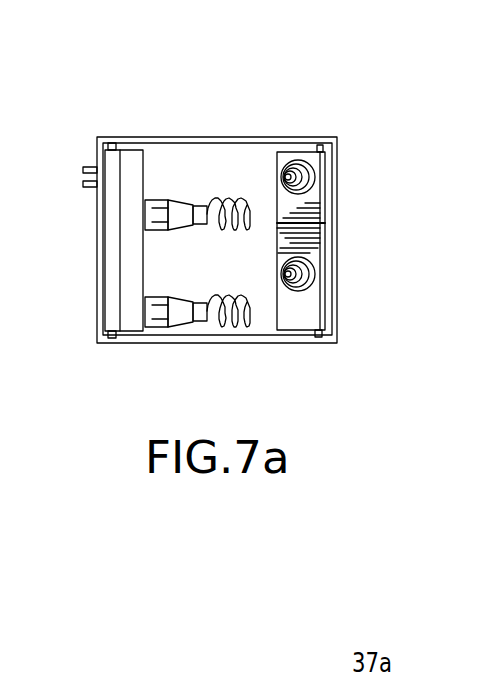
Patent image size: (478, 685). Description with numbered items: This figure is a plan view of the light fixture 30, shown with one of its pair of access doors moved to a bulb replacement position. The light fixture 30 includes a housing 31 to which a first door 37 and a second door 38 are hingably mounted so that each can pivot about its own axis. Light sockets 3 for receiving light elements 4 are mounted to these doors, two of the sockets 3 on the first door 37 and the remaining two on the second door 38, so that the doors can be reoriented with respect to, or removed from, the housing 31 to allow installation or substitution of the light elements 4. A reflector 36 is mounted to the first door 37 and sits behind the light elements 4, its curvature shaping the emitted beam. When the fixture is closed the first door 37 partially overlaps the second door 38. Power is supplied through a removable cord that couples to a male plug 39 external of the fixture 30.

The light fixture 30 is at (333, 79).
The housing 31 is at (137, 341).
The light socket 3 is at (159, 205).
The light element 4 is at (216, 200).
The reflector 36 is at (310, 230).
The first door 37 is at (322, 173).
The second door 38 is at (125, 218).
The male plug 39 is at (93, 155).